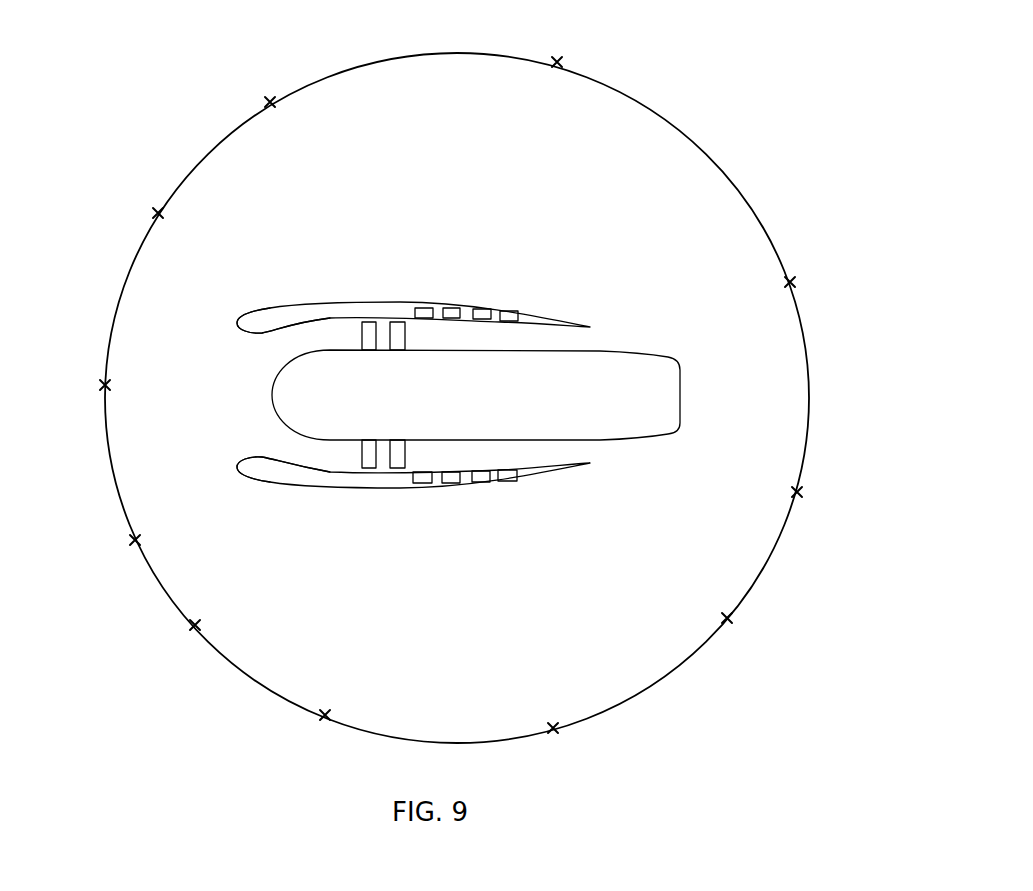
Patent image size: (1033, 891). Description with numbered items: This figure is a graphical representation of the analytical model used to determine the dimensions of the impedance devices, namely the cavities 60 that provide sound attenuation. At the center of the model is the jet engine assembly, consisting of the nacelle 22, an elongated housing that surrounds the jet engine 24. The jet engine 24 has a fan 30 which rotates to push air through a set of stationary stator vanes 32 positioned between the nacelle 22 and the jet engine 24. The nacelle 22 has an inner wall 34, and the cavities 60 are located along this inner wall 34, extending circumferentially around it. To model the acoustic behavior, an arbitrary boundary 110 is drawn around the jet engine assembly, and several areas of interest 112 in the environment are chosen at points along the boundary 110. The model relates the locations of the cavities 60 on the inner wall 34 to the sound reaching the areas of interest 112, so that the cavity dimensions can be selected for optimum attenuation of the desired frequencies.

The arbitrary boundary 110 is at (636, 95).
The areas of interest 112 is at (562, 60).
The nacelle 22 is at (253, 279).
The jet engine 24 is at (676, 389).
The fan 30 is at (368, 337).
The stator vanes 32 is at (400, 337).
The inner wall 34 is at (287, 327).
The cavities 60 is at (452, 308).